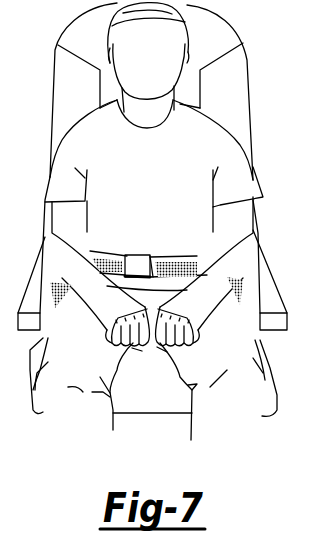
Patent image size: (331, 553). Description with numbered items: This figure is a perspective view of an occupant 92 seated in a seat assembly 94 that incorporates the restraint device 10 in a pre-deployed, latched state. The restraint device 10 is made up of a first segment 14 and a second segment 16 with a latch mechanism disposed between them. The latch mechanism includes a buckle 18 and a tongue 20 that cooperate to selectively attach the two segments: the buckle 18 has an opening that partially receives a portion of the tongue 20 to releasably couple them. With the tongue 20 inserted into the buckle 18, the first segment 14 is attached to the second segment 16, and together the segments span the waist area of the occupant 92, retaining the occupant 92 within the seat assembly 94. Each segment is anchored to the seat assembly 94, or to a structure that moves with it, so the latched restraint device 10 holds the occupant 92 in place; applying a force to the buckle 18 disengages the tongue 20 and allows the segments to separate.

The restraint device 10 is at (152, 227).
The first segment 14 is at (105, 262).
The second segment 16 is at (197, 257).
The buckle 18 is at (137, 258).
The tongue 20 is at (150, 262).
The occupant 92 is at (213, 142).
The seat assembly 94 is at (272, 310).